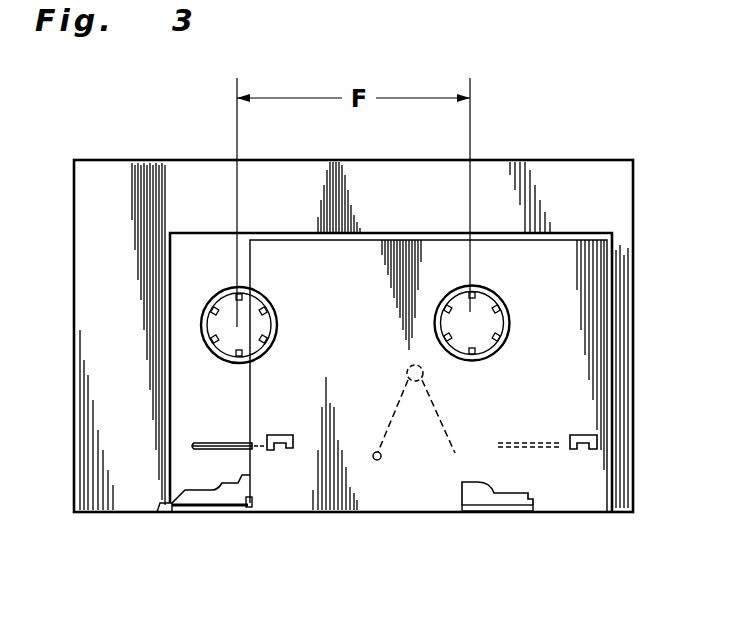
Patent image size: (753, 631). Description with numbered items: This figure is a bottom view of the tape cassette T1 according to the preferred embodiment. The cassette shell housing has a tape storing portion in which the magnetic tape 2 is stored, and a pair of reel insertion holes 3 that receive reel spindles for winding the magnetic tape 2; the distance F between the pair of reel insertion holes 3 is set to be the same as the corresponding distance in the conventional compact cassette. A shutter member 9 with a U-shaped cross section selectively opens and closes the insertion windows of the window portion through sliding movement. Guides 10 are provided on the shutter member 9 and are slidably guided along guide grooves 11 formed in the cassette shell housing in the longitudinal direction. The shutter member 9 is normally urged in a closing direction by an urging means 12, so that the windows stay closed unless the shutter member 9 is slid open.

The tape cassette T1 is at (562, 153).
The magnetic tape 2 is at (224, 506).
The reel insertion holes 3 is at (230, 312).
The shutter member 9 is at (375, 490).
The guides 10 is at (282, 451).
The guide grooves 11 is at (203, 450).
The urging means 12 is at (447, 422).